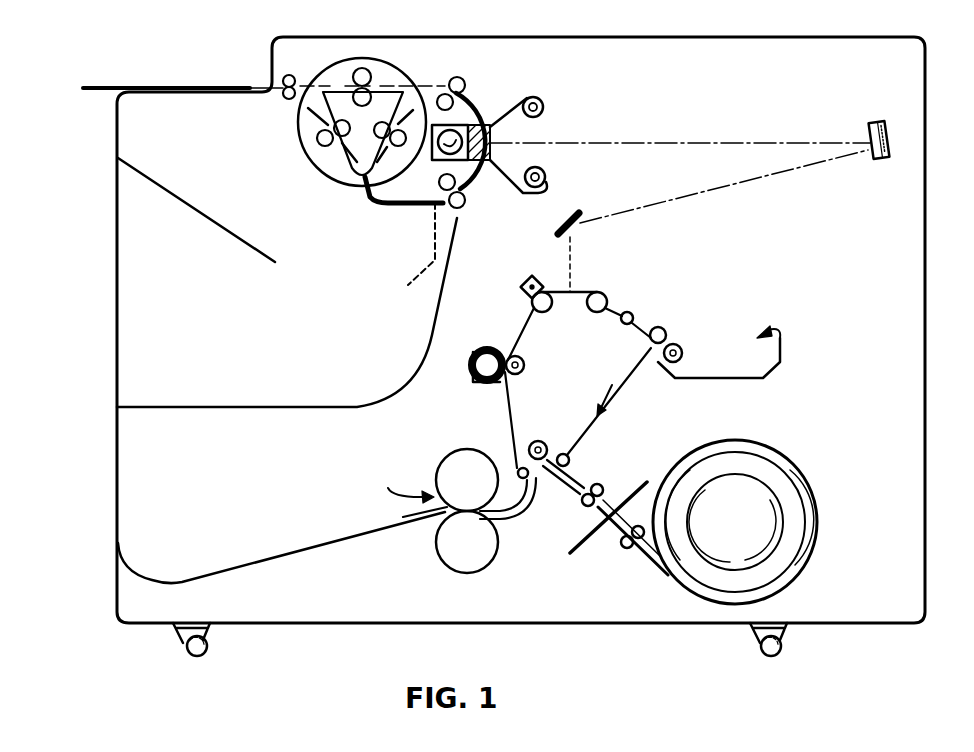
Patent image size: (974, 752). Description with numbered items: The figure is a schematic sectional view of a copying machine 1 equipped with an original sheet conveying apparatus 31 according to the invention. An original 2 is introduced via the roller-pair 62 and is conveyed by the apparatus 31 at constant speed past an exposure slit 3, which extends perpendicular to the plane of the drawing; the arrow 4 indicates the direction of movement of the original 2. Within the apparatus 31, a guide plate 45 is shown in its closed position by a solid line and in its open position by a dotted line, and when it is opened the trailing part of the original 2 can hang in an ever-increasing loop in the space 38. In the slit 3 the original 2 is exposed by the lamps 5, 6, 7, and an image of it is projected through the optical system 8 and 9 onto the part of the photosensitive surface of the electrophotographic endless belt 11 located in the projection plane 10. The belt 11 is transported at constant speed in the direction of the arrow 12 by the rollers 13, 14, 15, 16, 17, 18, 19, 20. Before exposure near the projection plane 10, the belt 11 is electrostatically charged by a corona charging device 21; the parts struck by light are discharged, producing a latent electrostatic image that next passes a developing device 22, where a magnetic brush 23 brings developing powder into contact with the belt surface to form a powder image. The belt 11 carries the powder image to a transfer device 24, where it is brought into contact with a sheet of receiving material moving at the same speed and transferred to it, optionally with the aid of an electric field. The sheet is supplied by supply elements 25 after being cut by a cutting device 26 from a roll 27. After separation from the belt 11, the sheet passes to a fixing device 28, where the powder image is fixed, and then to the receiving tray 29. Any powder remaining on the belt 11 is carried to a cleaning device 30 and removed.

The copying machine 1 is at (521, 331).
The original 2 is at (98, 87).
The exposure slit 3 is at (485, 123).
The arrow 4 is at (478, 108).
The lamp 5 is at (532, 100).
The lamp 6 is at (546, 177).
The lamp 7 is at (439, 157).
The optical system 8 is at (876, 124).
The optical system 9 is at (557, 222).
The projection plane 10 is at (582, 291).
The electrophotographic endless belt 11 is at (626, 400).
The arrow 12 is at (611, 385).
The roller 13 is at (598, 312).
The roller 14 is at (634, 317).
The roller 15 is at (667, 336).
The roller 16 is at (563, 453).
The roller 17 is at (530, 431).
The roller 18 is at (518, 468).
The roller 19 is at (525, 365).
The roller 20 is at (546, 312).
The corona charging device 21 is at (523, 282).
The developing device 22 is at (739, 353).
The magnetic brush 23 is at (683, 354).
The transfer device 24 is at (543, 478).
The supply elements 25 is at (612, 484).
The cutting device 26 is at (582, 540).
The roll 27 is at (790, 470).
The fixing device 28 is at (443, 511).
The receiving tray 29 is at (222, 578).
The cleaning device 30 is at (494, 350).
The apparatus 31 is at (292, 140).
The space 38 is at (287, 282).
The guide plate 45 is at (373, 195).
The roller-pair 62 is at (284, 98).